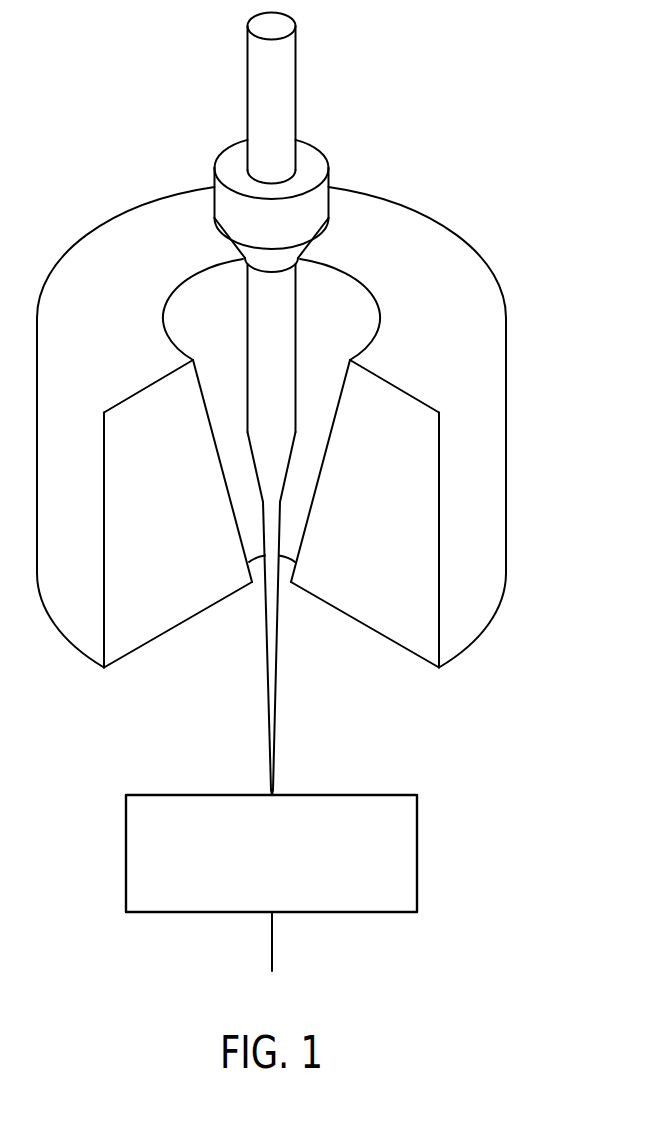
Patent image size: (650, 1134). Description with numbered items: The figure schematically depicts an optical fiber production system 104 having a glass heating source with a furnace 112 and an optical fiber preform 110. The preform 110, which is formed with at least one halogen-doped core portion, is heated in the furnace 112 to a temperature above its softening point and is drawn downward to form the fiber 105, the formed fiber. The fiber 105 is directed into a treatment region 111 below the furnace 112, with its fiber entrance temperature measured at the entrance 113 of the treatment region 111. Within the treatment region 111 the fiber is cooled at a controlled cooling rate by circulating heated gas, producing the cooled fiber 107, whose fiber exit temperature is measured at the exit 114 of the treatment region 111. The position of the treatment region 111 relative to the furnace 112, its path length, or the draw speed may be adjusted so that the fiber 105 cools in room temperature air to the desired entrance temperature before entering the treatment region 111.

The production system 104 is at (103, 123).
The fiber 105 is at (270, 772).
The fiber 107 is at (271, 950).
The optical fiber preform 110 is at (297, 302).
The treatment region 111 is at (417, 852).
The furnace 112 is at (470, 243).
The entrance 113 is at (275, 792).
The exit 114 is at (273, 915).